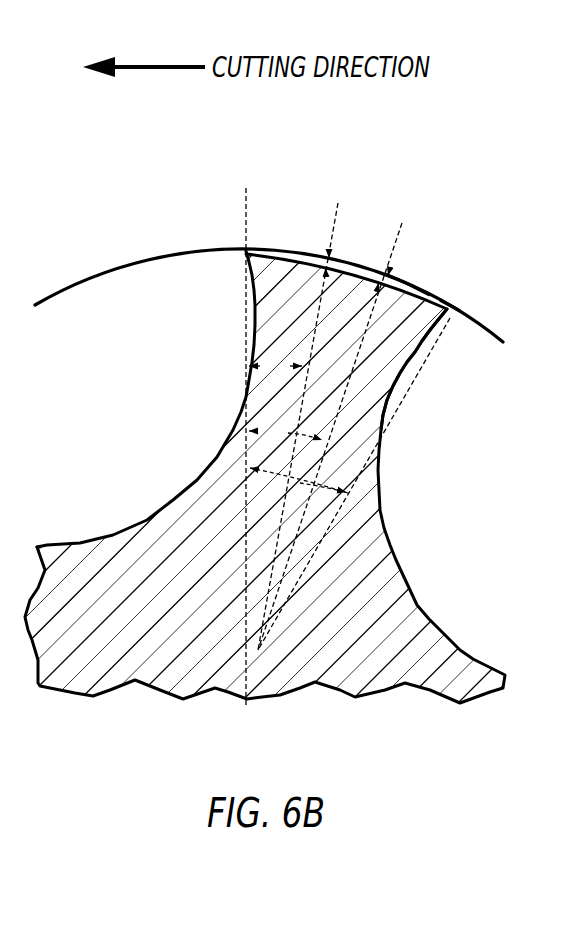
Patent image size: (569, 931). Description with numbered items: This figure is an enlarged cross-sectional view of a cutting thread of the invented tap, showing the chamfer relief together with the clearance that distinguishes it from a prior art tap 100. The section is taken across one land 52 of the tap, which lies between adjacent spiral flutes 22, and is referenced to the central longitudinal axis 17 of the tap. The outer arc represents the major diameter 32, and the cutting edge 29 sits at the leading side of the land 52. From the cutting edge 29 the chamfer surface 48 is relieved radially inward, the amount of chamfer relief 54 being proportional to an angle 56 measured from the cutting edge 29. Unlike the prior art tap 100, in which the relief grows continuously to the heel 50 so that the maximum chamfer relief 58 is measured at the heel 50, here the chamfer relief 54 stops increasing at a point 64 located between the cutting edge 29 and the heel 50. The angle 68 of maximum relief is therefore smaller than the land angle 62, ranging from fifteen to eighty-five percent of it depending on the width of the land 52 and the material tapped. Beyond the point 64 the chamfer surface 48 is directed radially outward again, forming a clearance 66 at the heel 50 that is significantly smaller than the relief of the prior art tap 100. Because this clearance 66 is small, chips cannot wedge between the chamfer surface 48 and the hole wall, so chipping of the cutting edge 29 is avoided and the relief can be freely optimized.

The prior art tap 100 is at (63, 192).
The spiral flutes 22 is at (430, 528).
The central longitudinal axis 17 is at (249, 704).
The cutting edge 29 is at (239, 258).
The major diameter 32 is at (209, 246).
The chamfer surface 48 is at (358, 278).
The heel 50 is at (450, 318).
The land 52 is at (382, 421).
The chamfer relief 54 is at (338, 203).
The angle 56 is at (275, 366).
The maximum chamfer relief 58 is at (402, 223).
The land angle 62 is at (322, 486).
The point 64 is at (392, 282).
The clearance 66 is at (455, 301).
The angle of maximum relief 68 is at (285, 433).